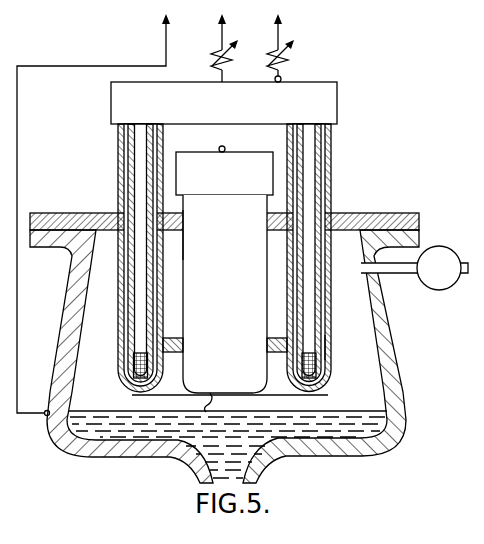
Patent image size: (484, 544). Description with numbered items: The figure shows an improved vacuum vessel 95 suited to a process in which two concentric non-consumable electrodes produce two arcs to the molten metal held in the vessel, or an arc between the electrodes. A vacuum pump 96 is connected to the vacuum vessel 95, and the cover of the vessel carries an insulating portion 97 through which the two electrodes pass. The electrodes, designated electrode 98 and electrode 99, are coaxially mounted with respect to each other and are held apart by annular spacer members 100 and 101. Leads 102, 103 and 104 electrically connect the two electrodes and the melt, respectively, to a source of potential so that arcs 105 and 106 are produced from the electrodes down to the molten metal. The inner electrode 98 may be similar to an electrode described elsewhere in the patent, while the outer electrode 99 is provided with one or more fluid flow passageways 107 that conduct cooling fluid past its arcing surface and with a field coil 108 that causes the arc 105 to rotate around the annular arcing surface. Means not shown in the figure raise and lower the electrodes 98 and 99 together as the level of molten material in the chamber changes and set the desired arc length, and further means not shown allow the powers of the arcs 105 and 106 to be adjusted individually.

The vacuum vessel 95 is at (427, 314).
The vacuum pump 96 is at (458, 245).
The insulating portion 97 is at (342, 213).
The electrode 98 is at (237, 292).
The electrode 99 is at (370, 153).
The annular spacer member 100 is at (184, 233).
The annular spacer member 101 is at (175, 338).
The lead 102 is at (218, 52).
The lead 103 is at (276, 52).
The lead 104 is at (90, 68).
The arc 105 is at (133, 413).
The arc 106 is at (210, 393).
The fluid flow passageway 107 is at (323, 348).
The field coil 108 is at (313, 368).